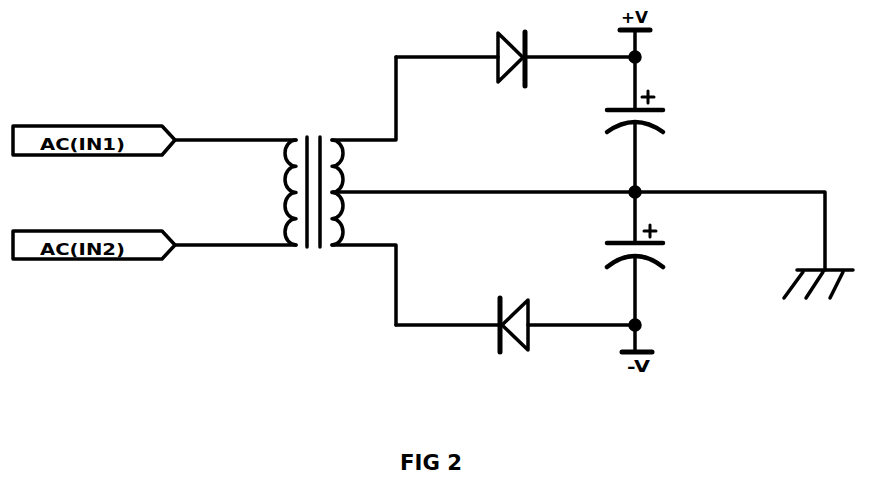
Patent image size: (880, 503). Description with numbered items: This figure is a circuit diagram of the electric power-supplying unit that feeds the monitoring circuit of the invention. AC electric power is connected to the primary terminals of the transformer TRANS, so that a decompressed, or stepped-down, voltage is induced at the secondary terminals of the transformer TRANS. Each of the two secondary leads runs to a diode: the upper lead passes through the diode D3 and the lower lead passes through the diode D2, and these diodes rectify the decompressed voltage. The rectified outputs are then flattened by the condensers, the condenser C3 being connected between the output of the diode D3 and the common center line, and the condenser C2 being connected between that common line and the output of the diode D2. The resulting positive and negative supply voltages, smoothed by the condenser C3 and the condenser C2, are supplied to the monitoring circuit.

The transformer TRANS is at (334, 191).
The diode D3 is at (566, 48).
The diode D2 is at (567, 314).
The condenser C3 is at (649, 124).
The condenser C2 is at (650, 258).